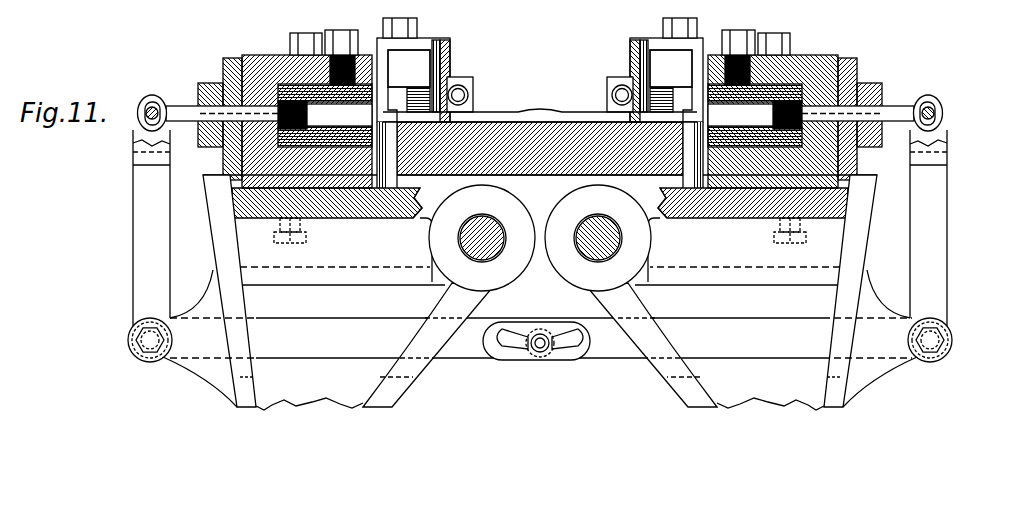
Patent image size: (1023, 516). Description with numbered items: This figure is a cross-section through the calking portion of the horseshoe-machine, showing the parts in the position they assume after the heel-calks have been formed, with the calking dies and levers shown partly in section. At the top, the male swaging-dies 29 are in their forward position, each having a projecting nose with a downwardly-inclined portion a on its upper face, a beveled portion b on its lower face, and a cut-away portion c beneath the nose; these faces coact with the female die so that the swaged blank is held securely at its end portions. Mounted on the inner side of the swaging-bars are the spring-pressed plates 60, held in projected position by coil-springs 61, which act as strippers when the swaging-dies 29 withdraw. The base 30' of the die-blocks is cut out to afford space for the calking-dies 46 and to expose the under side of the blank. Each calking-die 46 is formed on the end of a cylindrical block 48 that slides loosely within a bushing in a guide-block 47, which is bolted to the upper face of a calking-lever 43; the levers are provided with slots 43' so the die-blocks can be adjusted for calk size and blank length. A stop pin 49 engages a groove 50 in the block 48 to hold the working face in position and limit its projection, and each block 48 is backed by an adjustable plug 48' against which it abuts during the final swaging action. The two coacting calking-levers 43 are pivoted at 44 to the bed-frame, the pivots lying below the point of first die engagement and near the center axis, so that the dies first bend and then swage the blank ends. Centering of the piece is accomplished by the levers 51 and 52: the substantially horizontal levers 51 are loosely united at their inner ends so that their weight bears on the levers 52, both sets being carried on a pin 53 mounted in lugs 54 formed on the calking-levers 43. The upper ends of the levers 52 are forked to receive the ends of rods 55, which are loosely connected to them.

The swaging-die 29 is at (424, 44).
The base of the die-blocks 30' is at (540, 215).
The calking-lever 43 is at (540, 292).
The slot 43' is at (540, 236).
The pivot 44 is at (498, 255).
The calking-die 46 is at (404, 220).
The guide-block 47 is at (258, 54).
The cylindrical block 48 is at (540, 115).
The adjustable plug 48' is at (540, 92).
The stop pin 49 is at (345, 38).
The groove 50 is at (301, 42).
The centering lever 51 is at (460, 350).
The centering lever 52 is at (139, 213).
The pin 53 is at (142, 350).
The lug 54 is at (200, 366).
The rod 55 is at (186, 106).
The spring-pressed plate 60 is at (456, 76).
The coil-spring 61 is at (468, 92).
The downwardly-inclined portion a is at (540, 68).
The beveled portion b is at (452, 108).
The cut-away portion c is at (440, 97).